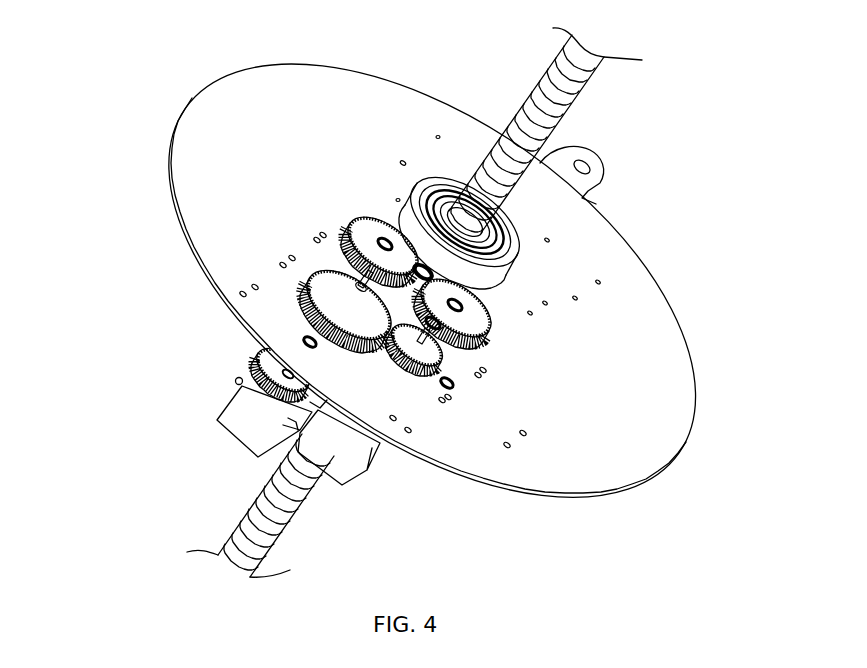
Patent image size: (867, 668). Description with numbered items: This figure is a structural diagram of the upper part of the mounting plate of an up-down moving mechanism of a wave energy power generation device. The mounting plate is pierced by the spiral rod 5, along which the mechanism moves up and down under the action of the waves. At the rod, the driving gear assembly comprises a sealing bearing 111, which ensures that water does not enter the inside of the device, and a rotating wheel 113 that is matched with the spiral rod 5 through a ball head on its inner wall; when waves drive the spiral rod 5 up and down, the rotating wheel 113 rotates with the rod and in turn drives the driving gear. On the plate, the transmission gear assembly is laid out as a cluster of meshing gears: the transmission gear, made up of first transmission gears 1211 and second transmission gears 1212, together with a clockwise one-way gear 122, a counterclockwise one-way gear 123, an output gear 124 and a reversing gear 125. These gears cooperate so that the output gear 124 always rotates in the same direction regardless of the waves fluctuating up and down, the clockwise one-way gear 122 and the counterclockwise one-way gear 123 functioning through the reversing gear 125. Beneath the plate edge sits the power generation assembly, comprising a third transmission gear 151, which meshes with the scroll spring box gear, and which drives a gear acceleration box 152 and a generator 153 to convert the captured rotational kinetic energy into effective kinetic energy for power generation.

The spiral rod 5 is at (248, 70).
The sealing bearing 111 is at (527, 253).
The rotating wheel 113 is at (497, 240).
The clockwise one-way gear 122 is at (340, 262).
The first transmission gear 1211 is at (362, 243).
The second transmission gear 1212 is at (358, 288).
The output gear 124 is at (335, 306).
The counterclockwise one-way gear 123 is at (462, 352).
The reversing gear 125 is at (423, 357).
The third transmission gear 151 is at (262, 382).
The gear acceleration box 152 is at (236, 420).
The generator 153 is at (337, 457).